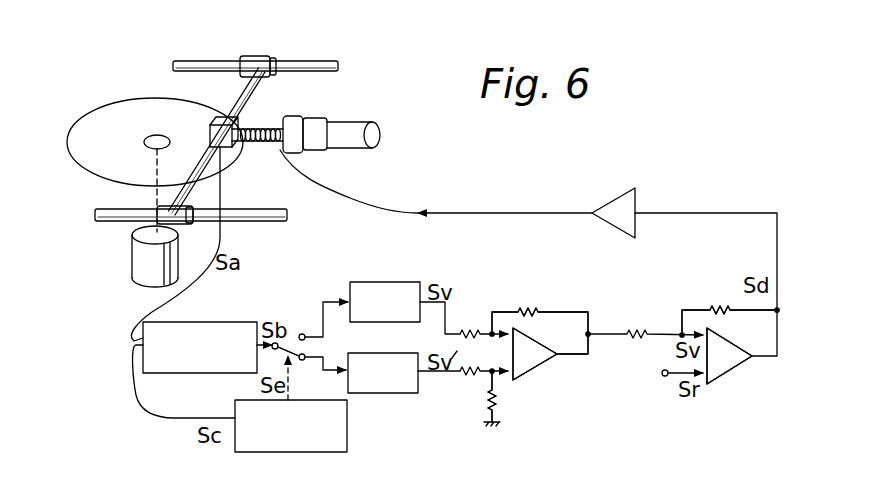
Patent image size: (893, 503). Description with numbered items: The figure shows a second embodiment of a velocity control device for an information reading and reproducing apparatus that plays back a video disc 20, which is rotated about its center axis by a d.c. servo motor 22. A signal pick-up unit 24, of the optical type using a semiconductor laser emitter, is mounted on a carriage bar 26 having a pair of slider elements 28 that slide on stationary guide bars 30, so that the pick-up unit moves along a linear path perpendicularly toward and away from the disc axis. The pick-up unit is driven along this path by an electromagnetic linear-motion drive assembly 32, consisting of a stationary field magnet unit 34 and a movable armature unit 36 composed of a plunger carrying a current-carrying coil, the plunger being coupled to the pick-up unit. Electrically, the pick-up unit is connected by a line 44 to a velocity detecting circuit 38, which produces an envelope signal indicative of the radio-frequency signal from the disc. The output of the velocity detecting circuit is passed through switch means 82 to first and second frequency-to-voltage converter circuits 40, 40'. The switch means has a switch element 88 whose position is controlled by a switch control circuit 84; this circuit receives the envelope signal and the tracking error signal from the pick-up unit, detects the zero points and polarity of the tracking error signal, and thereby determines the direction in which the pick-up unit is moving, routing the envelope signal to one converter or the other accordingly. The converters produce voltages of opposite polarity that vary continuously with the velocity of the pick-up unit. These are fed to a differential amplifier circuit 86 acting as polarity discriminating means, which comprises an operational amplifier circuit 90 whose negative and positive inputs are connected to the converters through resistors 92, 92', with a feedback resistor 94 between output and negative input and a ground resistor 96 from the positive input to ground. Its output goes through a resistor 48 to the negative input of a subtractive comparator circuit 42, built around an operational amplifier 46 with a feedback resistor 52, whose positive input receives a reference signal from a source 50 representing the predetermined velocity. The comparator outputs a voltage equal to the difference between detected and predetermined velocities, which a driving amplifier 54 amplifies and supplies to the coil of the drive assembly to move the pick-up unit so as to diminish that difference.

The video disc 20 is at (120, 98).
The d.c. servo motor 22 is at (132, 264).
The signal pick-up unit 24 is at (214, 117).
The carriage bar 26 is at (247, 93).
The slider element 28 is at (260, 57).
The guide bar 30 is at (332, 57).
The linear-motion drive assembly 32 is at (345, 104).
The stationary field magnet unit 34 is at (358, 153).
The movable armature unit 36 is at (262, 145).
The velocity detecting circuit 38 is at (181, 375).
The first frequency-to-voltage converter circuit 40 is at (385, 284).
The second frequency-to-voltage converter circuit 40' is at (383, 391).
The subtractive comparator circuit 42 is at (723, 395).
The line 44 is at (203, 280).
The operational amplifier 46 is at (737, 361).
The resistor 48 is at (633, 330).
The source of reference signal 50 is at (662, 376).
The feedback resistor 52 is at (722, 303).
The driving amplifier 54 is at (608, 226).
The switch means 82 is at (295, 308).
The switch control circuit 84 is at (302, 453).
The differential amplifier circuit 86 is at (567, 368).
The switch element 88 is at (310, 360).
The operational amplifier circuit 90 is at (538, 372).
The resistor 92 is at (484, 312).
The resistor 92' is at (472, 394).
The feedback resistor 94 is at (532, 306).
The ground resistor 96 is at (503, 405).